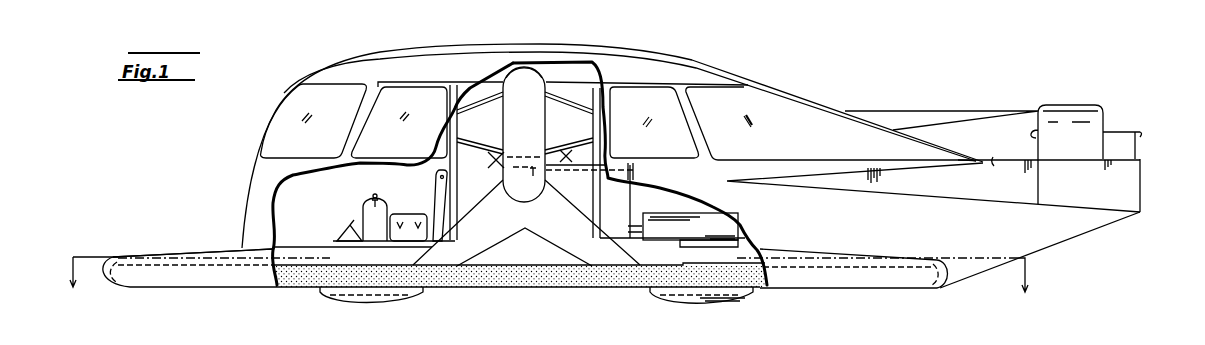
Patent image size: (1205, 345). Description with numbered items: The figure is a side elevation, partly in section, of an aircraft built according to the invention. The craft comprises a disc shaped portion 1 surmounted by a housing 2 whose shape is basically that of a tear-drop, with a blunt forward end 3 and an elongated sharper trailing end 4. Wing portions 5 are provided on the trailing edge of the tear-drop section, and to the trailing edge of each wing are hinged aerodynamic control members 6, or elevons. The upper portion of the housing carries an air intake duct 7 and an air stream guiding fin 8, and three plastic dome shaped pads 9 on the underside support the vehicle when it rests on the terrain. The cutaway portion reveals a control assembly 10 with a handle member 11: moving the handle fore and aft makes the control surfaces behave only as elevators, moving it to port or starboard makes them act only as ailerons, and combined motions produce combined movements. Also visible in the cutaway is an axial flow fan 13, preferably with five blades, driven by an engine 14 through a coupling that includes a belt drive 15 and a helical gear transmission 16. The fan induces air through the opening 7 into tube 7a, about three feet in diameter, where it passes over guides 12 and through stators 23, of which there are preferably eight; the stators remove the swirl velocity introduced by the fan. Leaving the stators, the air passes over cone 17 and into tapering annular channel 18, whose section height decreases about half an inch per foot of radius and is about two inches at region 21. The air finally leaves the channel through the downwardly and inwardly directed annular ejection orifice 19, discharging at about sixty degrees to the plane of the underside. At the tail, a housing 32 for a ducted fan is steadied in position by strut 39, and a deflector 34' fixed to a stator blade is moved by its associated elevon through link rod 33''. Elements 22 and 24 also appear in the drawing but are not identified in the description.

The disc shaped portion 1 is at (175, 267).
The housing 2 is at (683, 68).
The blunt forward end 3 is at (283, 110).
The elongated sharper trailing end 4 is at (938, 147).
The wing portions 5 is at (549, 227).
The aerodynamic control members 6 is at (1117, 198).
The air intake duct 7 is at (568, 52).
The tube 7a is at (565, 70).
The air stream guiding fin 8 is at (441, 47).
The dome shaped pads 9 is at (378, 304).
The control assembly 10 is at (383, 205).
The handle member 11 is at (372, 194).
The guides 12 is at (560, 92).
The axial flow fan 13 is at (567, 120).
The engine 14 is at (723, 227).
The belt drive 15 is at (652, 196).
The helical gear transmission 16 is at (543, 176).
The cone 17 is at (512, 260).
The tapering annular channel 18 is at (212, 257).
The annular ejection orifice 19 is at (118, 283).
The region 21 is at (120, 260).
The float bottom 22 is at (163, 288).
The stators 23 is at (542, 158).
The control pedal 24 is at (342, 233).
The housing 32 is at (1061, 113).
The link rod 33'' is at (1159, 177).
The deflector 34' is at (1122, 127).
The strut 39 is at (933, 114).